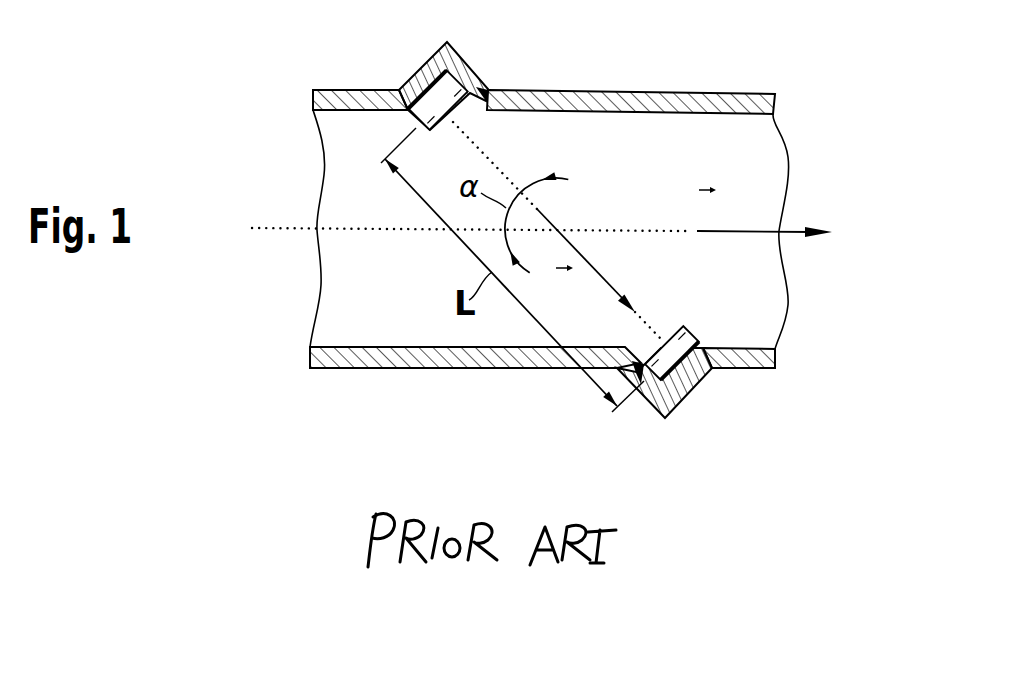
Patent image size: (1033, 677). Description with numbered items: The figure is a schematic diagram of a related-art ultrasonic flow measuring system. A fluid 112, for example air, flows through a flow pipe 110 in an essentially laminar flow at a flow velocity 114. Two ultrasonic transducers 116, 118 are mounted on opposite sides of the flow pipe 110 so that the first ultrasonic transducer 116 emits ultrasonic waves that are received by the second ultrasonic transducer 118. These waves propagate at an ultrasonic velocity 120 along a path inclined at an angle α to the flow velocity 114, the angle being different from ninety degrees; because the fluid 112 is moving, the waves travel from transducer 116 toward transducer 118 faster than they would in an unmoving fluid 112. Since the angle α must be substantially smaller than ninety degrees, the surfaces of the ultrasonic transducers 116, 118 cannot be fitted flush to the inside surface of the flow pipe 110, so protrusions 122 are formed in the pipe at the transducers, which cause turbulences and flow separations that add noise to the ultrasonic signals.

The flow pipe 110 is at (682, 102).
The fluid 112 is at (350, 278).
The flow velocity 114 is at (790, 230).
The first ultrasonic transducer 116 is at (441, 82).
The second ultrasonic transducer 118 is at (700, 372).
The ultrasonic wave velocity 120 is at (585, 255).
The protrusions 122 is at (490, 88).